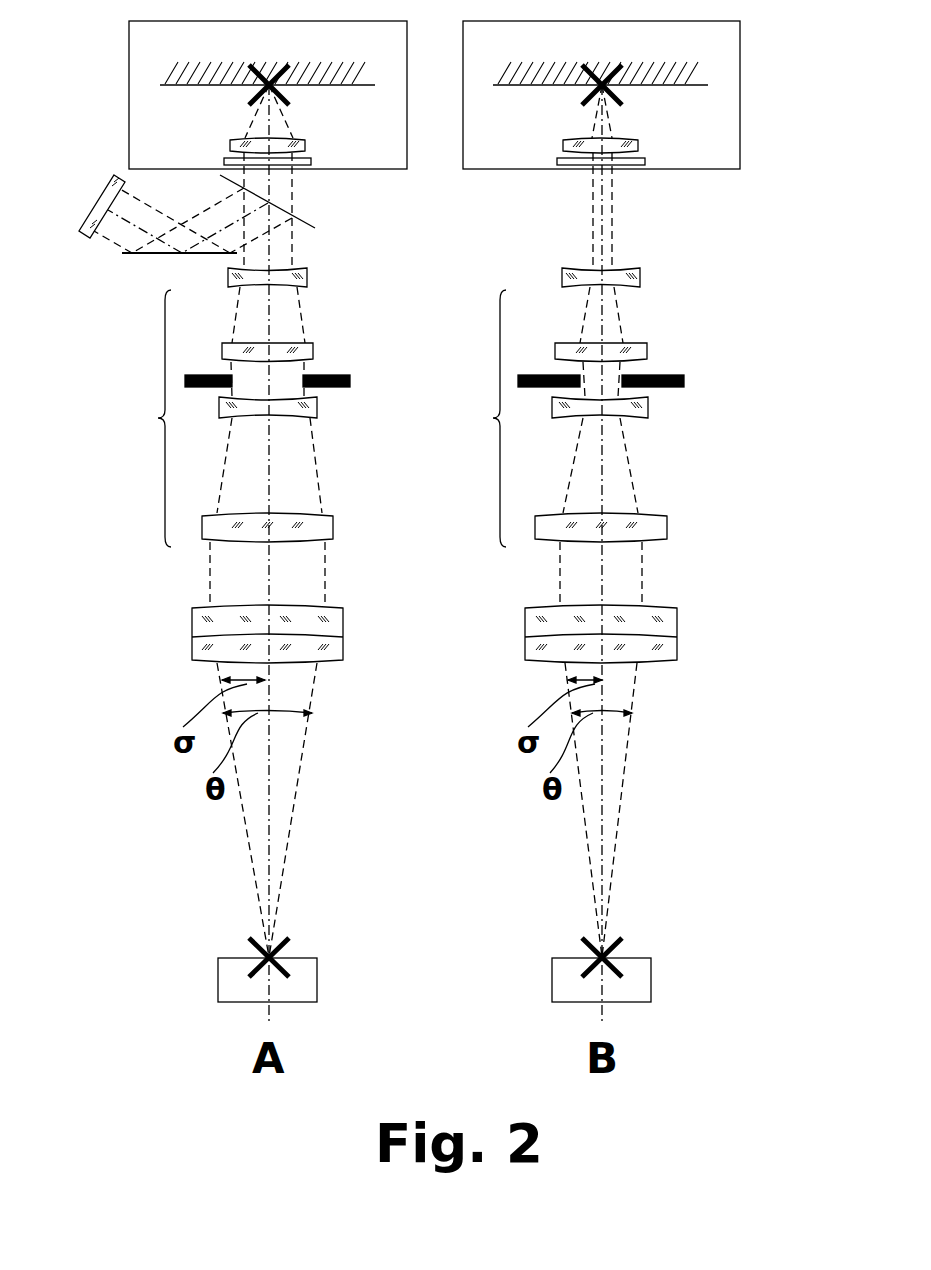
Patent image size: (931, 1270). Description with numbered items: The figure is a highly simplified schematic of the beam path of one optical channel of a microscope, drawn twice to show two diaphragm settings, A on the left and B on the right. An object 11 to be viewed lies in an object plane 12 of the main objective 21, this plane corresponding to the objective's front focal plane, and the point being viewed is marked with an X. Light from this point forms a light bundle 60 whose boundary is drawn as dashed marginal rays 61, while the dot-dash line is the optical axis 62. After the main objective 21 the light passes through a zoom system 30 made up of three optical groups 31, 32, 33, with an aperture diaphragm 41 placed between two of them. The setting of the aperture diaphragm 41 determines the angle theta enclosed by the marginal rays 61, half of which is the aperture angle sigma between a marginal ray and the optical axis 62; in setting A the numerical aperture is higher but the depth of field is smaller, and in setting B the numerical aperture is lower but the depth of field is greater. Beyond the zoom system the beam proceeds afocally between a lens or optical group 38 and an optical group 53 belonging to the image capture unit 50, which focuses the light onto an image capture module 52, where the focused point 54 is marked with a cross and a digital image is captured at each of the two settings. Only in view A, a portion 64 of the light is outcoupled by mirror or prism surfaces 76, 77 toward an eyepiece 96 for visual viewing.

The object 11 is at (317, 980).
The object plane 12 is at (280, 952).
The main objective 21 is at (343, 635).
The zoom system 30 is at (312, 418).
The first optical group of the zoom system 31 is at (333, 527).
The second optical group of the zoom system 32 is at (318, 408).
The third optical group of the zoom system 33 is at (313, 352).
The lens or optical group 38 is at (307, 278).
The aperture diaphragm 41 is at (352, 378).
The image capture unit 50 is at (407, 150).
The image capture module 52 is at (372, 72).
The optical group of image capture unit 53 is at (224, 160).
The focal point on sample 54 is at (285, 98).
The light bundle 60 is at (292, 738).
The marginal rays 61 is at (296, 812).
The optical axis 62 is at (269, 487).
The outcoupled portion for visual viewing 64 is at (222, 238).
The mirror or prism surface 76 is at (303, 220).
The mirror or prism surface 77 is at (132, 257).
The eyepiece 96 is at (82, 240).